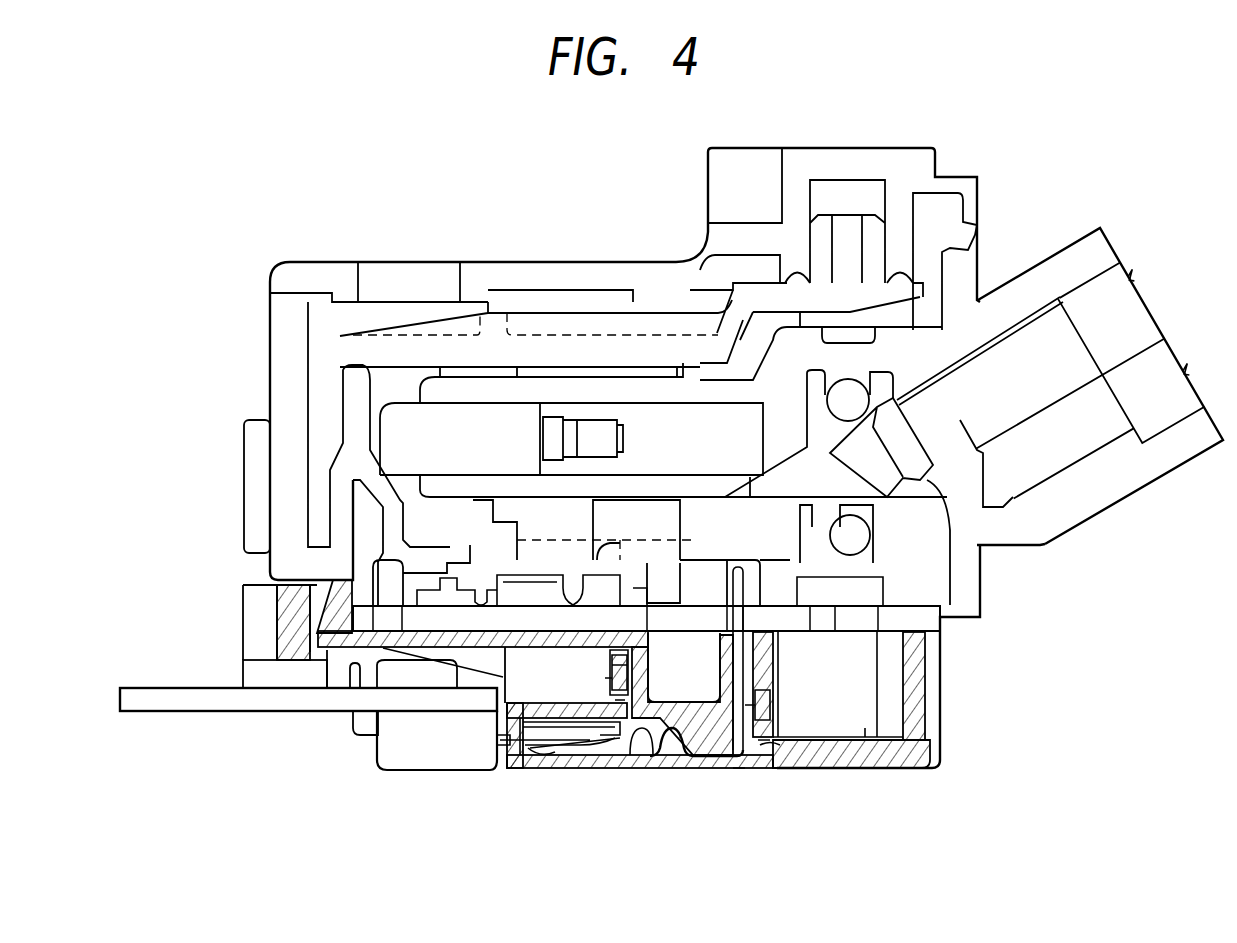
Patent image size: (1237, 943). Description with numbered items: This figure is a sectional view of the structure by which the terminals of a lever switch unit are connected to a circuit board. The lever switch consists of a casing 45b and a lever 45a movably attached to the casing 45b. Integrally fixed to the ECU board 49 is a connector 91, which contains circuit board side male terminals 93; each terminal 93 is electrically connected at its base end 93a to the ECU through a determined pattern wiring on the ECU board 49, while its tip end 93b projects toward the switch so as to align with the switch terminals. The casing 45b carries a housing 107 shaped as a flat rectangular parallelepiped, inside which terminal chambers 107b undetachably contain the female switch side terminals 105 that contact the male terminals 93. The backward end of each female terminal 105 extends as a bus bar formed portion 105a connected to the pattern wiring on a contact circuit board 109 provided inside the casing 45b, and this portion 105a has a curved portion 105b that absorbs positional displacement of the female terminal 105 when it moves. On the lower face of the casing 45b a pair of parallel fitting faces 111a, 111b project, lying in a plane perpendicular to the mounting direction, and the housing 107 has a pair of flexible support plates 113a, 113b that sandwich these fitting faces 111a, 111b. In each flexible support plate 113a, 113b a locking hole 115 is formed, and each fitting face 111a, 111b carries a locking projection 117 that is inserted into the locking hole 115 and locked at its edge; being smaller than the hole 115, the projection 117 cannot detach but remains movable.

The lever 45a is at (1050, 262).
The casing 45b is at (495, 262).
The ECU board 49 is at (153, 688).
The connector 91 is at (392, 775).
The circuit board side terminal 93 is at (493, 740).
The base end 93a is at (355, 735).
The tip end 93b is at (548, 767).
The switch side terminal 105 is at (665, 770).
The bus bar formed portion 105a is at (730, 578).
The curved portion 105b is at (763, 700).
The housing 107 is at (735, 768).
The terminal chamber 107b is at (660, 725).
The contact circuit board 109 is at (902, 618).
The fitting face 111a is at (613, 655).
The fitting face 111b is at (775, 695).
The flexible support plate 113a is at (593, 772).
The flexible support plate 113b is at (870, 750).
The locking hole 115 is at (612, 680).
The locking projection 117 is at (597, 707).